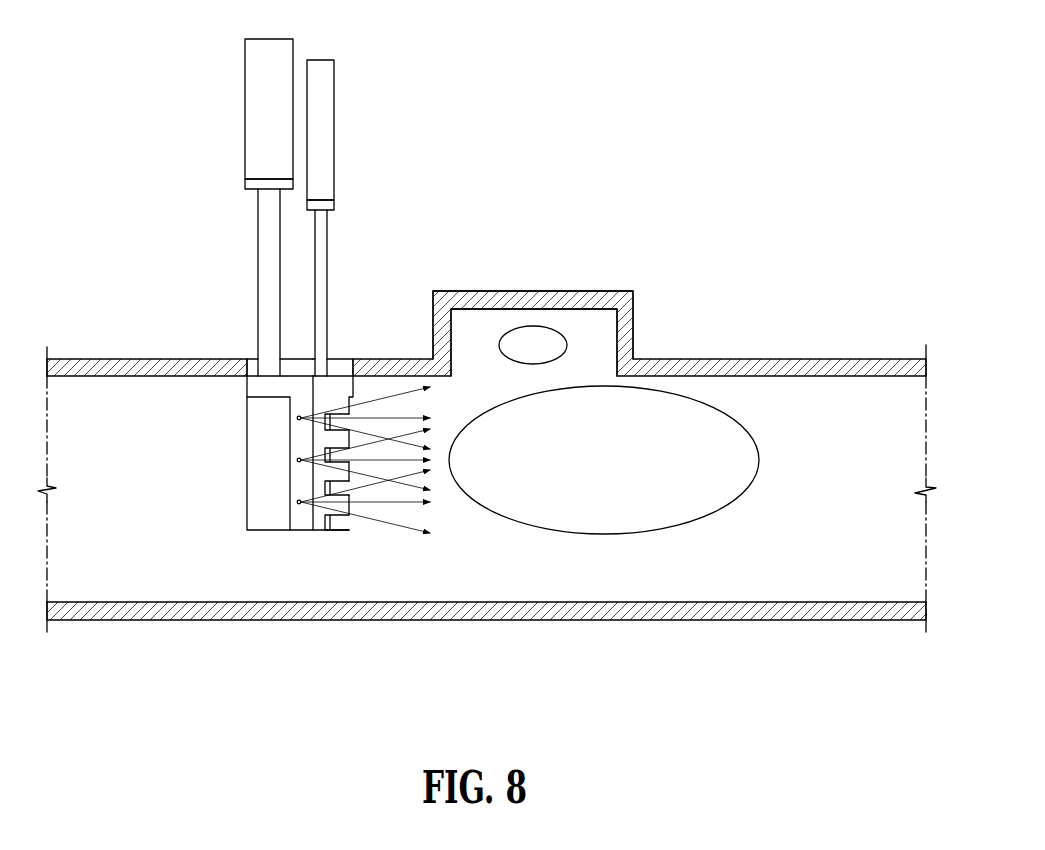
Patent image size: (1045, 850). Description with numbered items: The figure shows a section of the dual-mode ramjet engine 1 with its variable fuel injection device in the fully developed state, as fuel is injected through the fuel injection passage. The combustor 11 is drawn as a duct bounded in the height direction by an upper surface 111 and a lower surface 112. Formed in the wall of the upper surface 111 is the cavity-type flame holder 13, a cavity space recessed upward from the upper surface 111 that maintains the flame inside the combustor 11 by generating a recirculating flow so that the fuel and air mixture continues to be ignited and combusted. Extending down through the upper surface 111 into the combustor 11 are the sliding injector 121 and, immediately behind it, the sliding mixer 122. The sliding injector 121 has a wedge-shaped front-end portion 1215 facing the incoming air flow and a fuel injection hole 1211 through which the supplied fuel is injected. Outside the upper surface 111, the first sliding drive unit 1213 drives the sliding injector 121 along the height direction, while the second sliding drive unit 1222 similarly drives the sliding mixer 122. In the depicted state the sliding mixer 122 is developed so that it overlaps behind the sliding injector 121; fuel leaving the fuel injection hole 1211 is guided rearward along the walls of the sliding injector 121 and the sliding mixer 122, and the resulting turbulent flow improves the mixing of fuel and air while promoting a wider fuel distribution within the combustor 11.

The dual-mode ramjet engine 1 is at (486, 354).
The combustor 11 is at (486, 464).
The upper surface 111 is at (161, 358).
The lower surface 112 is at (160, 621).
The cavity-type flame holder 13 is at (487, 322).
The sliding injector 121 is at (237, 314).
The fuel injection hole 1211 is at (338, 388).
The first sliding drive unit 1213 is at (244, 108).
The front-end portion 1215 is at (253, 445).
The sliding mixer 122 is at (301, 324).
The second sliding drive unit 1222 is at (335, 129).